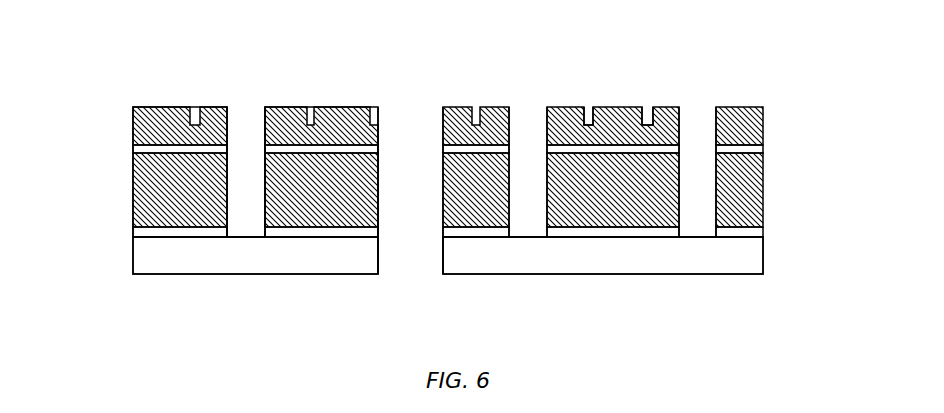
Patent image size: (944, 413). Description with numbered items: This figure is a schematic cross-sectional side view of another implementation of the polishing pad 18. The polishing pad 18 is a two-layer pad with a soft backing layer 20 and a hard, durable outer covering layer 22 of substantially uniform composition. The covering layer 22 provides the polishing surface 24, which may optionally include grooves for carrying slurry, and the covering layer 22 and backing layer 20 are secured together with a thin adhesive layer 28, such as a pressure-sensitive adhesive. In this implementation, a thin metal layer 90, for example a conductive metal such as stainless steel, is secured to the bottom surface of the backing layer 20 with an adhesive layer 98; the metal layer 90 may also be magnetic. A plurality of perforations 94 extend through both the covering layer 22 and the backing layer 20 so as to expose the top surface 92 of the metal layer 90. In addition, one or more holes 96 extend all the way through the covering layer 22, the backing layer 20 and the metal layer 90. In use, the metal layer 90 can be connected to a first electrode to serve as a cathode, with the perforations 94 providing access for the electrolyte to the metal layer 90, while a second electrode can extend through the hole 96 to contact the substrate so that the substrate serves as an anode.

The polishing pad 18 is at (118, 103).
The backing layer 20 is at (763, 191).
The covering layer 22 is at (763, 117).
The polishing surface 24 is at (613, 108).
The adhesive layer 28 is at (763, 146).
The metal layer 90 is at (133, 250).
The top surface of the metal layer 92 is at (245, 240).
The perforations 94 is at (245, 117).
The holes 96 is at (416, 137).
The adhesive layer 98 is at (763, 236).